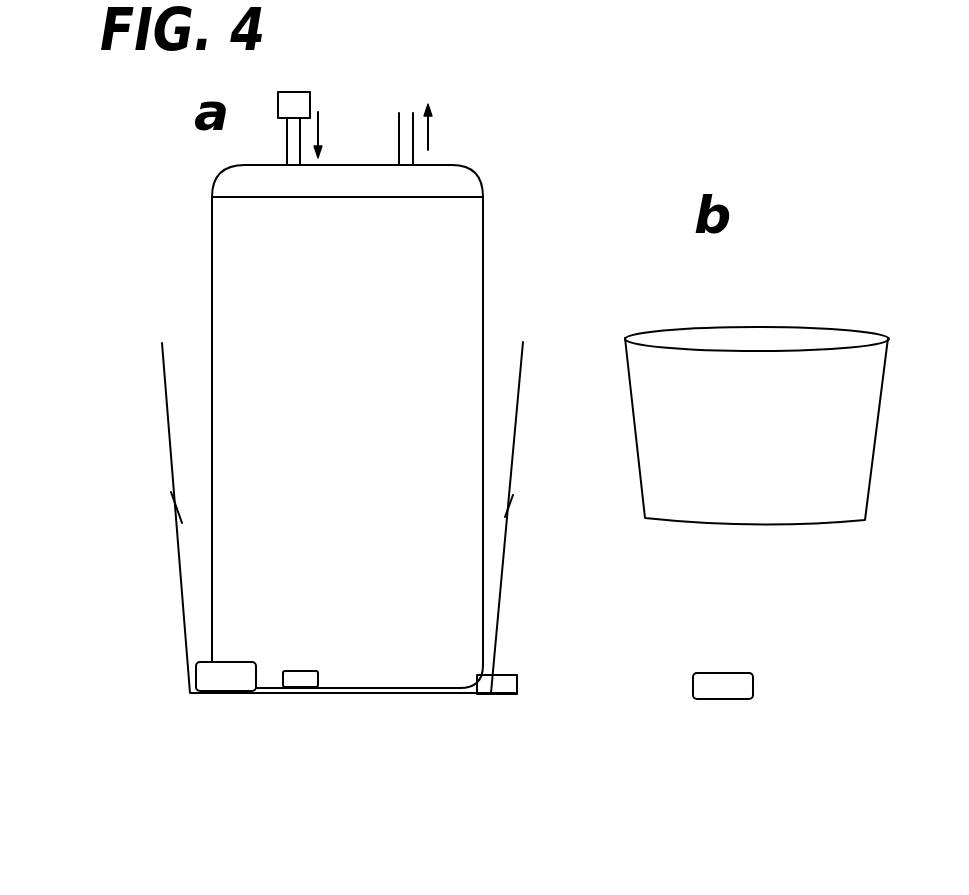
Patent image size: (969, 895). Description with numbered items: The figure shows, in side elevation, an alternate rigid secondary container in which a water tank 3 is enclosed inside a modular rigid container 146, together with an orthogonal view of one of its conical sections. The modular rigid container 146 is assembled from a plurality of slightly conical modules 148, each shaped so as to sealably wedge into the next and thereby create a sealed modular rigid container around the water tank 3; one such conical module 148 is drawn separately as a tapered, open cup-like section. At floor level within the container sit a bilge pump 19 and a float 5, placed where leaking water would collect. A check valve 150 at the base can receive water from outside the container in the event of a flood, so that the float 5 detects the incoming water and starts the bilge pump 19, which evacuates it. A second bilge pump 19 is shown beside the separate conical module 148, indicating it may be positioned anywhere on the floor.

In FIG. 4a, the water tank 3 is at (342, 408).
In FIG. 4a, the float 5 is at (303, 688).
In FIG. 4a, the bilge pump 19 is at (222, 682).
In FIG. 4b, the bilge pump 19 is at (720, 690).
In FIG. 4a, the modular rigid container 146 is at (148, 451).
In FIG. 4a, the conical module 148 is at (512, 457).
In FIG. 4b, the conical module 148 is at (760, 482).
In FIG. 4a, the check valve 150 is at (517, 683).